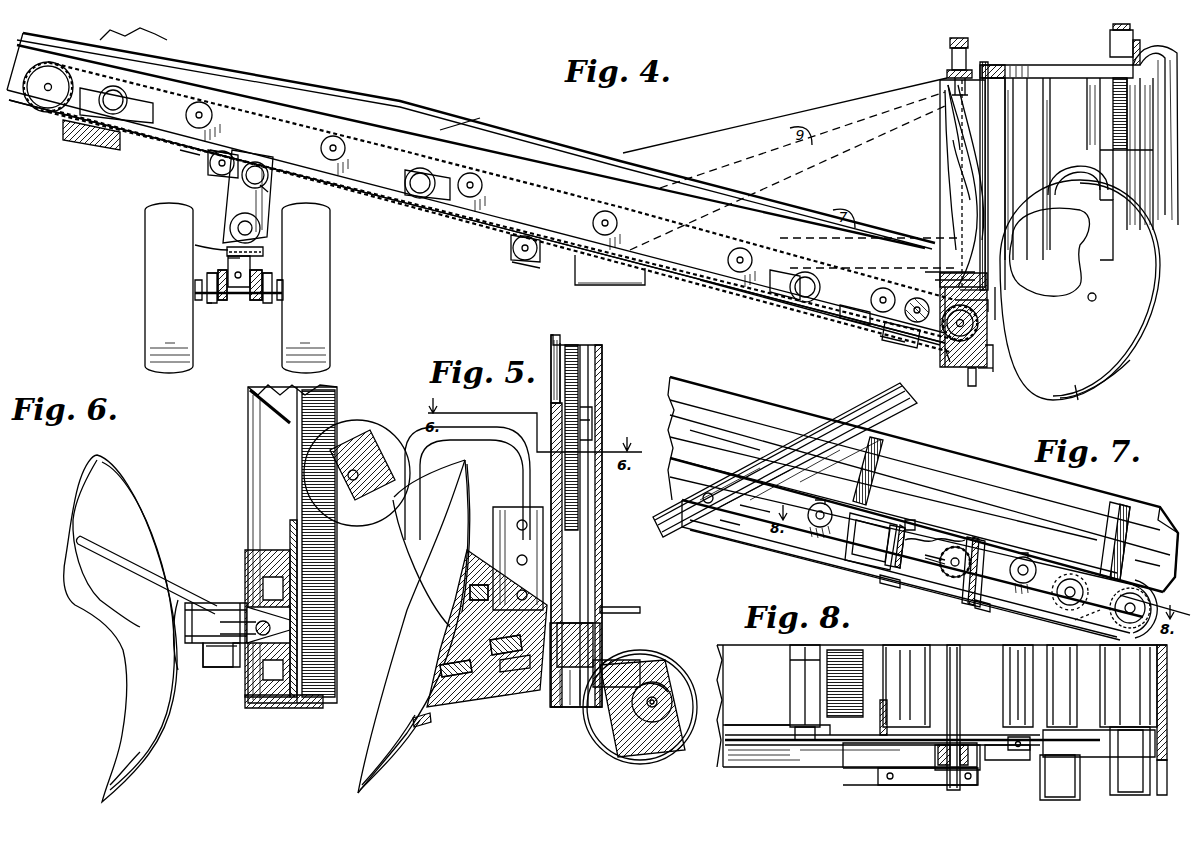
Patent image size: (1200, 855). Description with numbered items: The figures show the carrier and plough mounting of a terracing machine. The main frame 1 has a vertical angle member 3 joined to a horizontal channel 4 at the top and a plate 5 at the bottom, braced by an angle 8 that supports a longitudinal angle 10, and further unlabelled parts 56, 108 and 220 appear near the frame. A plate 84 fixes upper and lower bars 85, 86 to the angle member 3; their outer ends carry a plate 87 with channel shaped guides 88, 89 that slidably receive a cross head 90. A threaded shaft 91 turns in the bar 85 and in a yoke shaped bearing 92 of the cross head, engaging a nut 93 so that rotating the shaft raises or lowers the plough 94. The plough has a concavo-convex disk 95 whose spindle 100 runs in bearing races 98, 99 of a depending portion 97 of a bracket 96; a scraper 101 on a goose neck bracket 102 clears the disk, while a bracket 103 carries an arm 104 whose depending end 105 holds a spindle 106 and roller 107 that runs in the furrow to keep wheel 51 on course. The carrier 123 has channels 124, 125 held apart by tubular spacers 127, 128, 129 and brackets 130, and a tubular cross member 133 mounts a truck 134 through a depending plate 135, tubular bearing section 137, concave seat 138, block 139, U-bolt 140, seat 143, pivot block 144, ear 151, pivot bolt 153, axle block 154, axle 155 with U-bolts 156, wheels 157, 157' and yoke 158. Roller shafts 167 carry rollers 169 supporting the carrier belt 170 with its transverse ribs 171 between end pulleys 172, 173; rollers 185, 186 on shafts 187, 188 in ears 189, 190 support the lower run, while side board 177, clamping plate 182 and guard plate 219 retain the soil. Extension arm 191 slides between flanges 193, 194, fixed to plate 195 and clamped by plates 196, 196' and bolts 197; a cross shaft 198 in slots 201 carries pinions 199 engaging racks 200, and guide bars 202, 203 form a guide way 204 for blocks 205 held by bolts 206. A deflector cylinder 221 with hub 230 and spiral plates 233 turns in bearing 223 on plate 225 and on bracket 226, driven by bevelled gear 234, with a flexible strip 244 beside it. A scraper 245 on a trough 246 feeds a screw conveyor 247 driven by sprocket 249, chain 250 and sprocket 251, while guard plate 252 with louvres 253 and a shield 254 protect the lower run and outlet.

In FIG. 4, the main frame 1 is at (995, 72).
In FIG. 4, the vertical angle member 3 is at (1000, 90).
In FIG. 4, the horizontally arranged channel 4 is at (986, 64).
In FIG. 4, the plate 5 is at (955, 360).
In FIG. 7, the angle 8 is at (835, 418).
In FIG. 4, the longitudinal angle 10 is at (575, 272).
In FIG. 4, the wheel 51 is at (993, 360).
In FIG. 4, the pin 56 is at (992, 380).
In FIG. 4, the plate 84 is at (1010, 133).
In FIG. 4, the upper bar 85 is at (1065, 75).
In FIG. 6, the lower bar 86 is at (336, 572).
In FIG. 5, the lower bar 86 is at (378, 566).
In FIG. 6, the plate 87 is at (293, 520).
In FIG. 4, the channel shaped guide 88 is at (1158, 245).
In FIG. 6, the channel shaped guide 88 is at (250, 708).
In FIG. 4, the channel shaped guide 89 is at (1085, 139).
In FIG. 6, the channel shaped guide 89 is at (282, 558).
In FIG. 5, the channel shaped guide 89 is at (600, 371).
In FIG. 4, the cross head 90 is at (1130, 195).
In FIG. 6, the cross head 90 is at (240, 670).
In FIG. 5, the cross head 90 is at (522, 670).
In FIG. 4, the threaded shaft 91 is at (1118, 92).
In FIG. 6, the threaded shaft 91 is at (255, 637).
In FIG. 5, the threaded shaft 91 is at (585, 390).
In FIG. 5, the yoke shaped bearing 92 is at (598, 427).
In FIG. 5, the internally threaded nut 93 is at (593, 415).
In FIG. 4, the plough 94 is at (1105, 385).
In FIG. 6, the plough 94 is at (160, 550).
In FIG. 5, the plough 94 is at (395, 676).
In FIG. 4, the concavo-convex disk 95 is at (1075, 392).
In FIG. 6, the concavo-convex disk 95 is at (135, 750).
In FIG. 5, the concavo-convex disk 95 is at (402, 738).
In FIG. 6, the bracket 96 is at (203, 668).
In FIG. 5, the bracket 96 is at (500, 507).
In FIG. 5, the depending portion 97 is at (505, 675).
In FIG. 5, the bearing race 98 is at (468, 650).
In FIG. 5, the bearing race 99 is at (510, 658).
In FIG. 5, the spindle 100 is at (480, 680).
In FIG. 4, the scraper 101 is at (1080, 275).
In FIG. 6, the scraper 101 is at (80, 510).
In FIG. 5, the scraper 101 is at (420, 568).
In FIG. 4, the goose neck bracket 102 is at (1062, 175).
In FIG. 6, the goose neck bracket 102 is at (130, 555).
In FIG. 5, the goose neck bracket 102 is at (472, 427).
In FIG. 5, the bracket 103 is at (598, 645).
In FIG. 5, the arm 104 is at (605, 727).
In FIG. 5, the depending end 105 is at (645, 690).
In FIG. 5, the spindle 106 is at (660, 685).
In FIG. 5, the roller 107 is at (657, 755).
In FIG. 4, the bolt 108 is at (1110, 40).
In FIG. 4, the carrier 123 is at (628, 170).
In FIG. 7, the carrier 123 is at (890, 445).
In FIG. 8, the carrier 123 is at (830, 760).
In FIG. 7, the channel 124 is at (805, 552).
In FIG. 8, the channel 124 is at (803, 765).
In FIG. 4, the channel 125 is at (192, 140).
In FIG. 4, the tubular spacer 127 is at (120, 145).
In FIG. 4, the tubular spacer 128 is at (415, 198).
In FIG. 4, the tubular spacer 129 is at (790, 315).
In FIG. 8, the tubular spacer 129 is at (895, 655).
In FIG. 4, the bracket 130 is at (438, 214).
In FIG. 8, the bracket 130 is at (875, 705).
In FIG. 4, the tubular cross member 133 is at (269, 176).
In FIG. 4, the truck 134 is at (280, 300).
In FIG. 4, the depending plate 135 is at (236, 200).
In FIG. 4, the tubular bearing section 137 is at (262, 222).
In FIG. 4, the concave seat 138 is at (252, 230).
In FIG. 4, the block 139 is at (265, 252).
In FIG. 4, the U-bolt 140 is at (262, 215).
In FIG. 4, the seat 143 is at (225, 254).
In FIG. 4, the pivot block 144 is at (226, 259).
In FIG. 4, the ear 151 is at (218, 298).
In FIG. 4, the horizontal pivot bolt 153 is at (215, 303).
In FIG. 4, the axle block 154 is at (258, 303).
In FIG. 4, the axle 155 is at (197, 280).
In FIG. 4, the U-bolt 156 is at (212, 303).
In FIG. 4, the wheel 157 is at (154, 288).
In FIG. 4, the wheel 157' is at (328, 288).
In FIG. 4, the yoke 158 is at (262, 280).
In FIG. 4, the roller shaft 167 is at (483, 196).
In FIG. 4, the roller 169 is at (592, 223).
In FIG. 4, the carrier belt 170 is at (575, 198).
In FIG. 4, the transverse rib 171 is at (528, 186).
In FIG. 4, the end pulley 172 is at (58, 110).
In FIG. 4, the end pulley 173 is at (978, 326).
In FIG. 8, the end pulley 173 is at (1163, 770).
In FIG. 4, the side board 177 is at (405, 96).
In FIG. 4, the clamping plate 182 is at (505, 128).
In FIG. 4, the roller 185 is at (212, 170).
In FIG. 4, the roller 186 is at (318, 118).
In FIG. 4, the shaft 187 is at (230, 177).
In FIG. 4, the shaft 188 is at (522, 270).
In FIG. 4, the ear 189 is at (205, 155).
In FIG. 4, the ear 190 is at (512, 248).
In FIG. 7, the extension arm 191 is at (885, 580).
In FIG. 8, the extension arm 191 is at (990, 770).
In FIG. 7, the flange 193 is at (875, 515).
In FIG. 7, the flange 194 is at (843, 568).
In FIG. 8, the flange 194 is at (755, 765).
In FIG. 4, the plate 195 is at (947, 370).
In FIG. 7, the plate 195 is at (1110, 634).
In FIG. 7, the clamping plate 196 is at (939, 531).
In FIG. 7, the clamping plate 196' is at (958, 608).
In FIG. 8, the clamping plate 196' is at (910, 774).
In FIG. 7, the bolt 197 is at (905, 522).
In FIG. 8, the bolt 197 is at (885, 782).
In FIG. 4, the cross shaft 198 is at (875, 270).
In FIG. 7, the cross shaft 198 is at (975, 586).
In FIG. 8, the cross shaft 198 is at (958, 680).
In FIG. 7, the pinion gear 199 is at (940, 568).
In FIG. 8, the pinion gear 199 is at (975, 735).
In FIG. 7, the rack 200 is at (1012, 560).
In FIG. 4, the slot 201 is at (845, 330).
In FIG. 7, the slot 201 is at (895, 545).
In FIG. 8, the slot 201 is at (992, 745).
In FIG. 7, the guide bar 202 is at (693, 462).
In FIG. 7, the guide bar 203 is at (735, 528).
In FIG. 7, the guide way 204 is at (760, 518).
In FIG. 7, the block 205 is at (712, 530).
In FIG. 7, the bolt 206 is at (728, 488).
In FIG. 4, the guard plate 219 is at (885, 100).
In FIG. 4, the screw 220 is at (945, 152).
In FIG. 4, the cylinder 221 is at (945, 190).
In FIG. 4, the bearing 223 is at (952, 58).
In FIG. 4, the plate 225 is at (947, 74).
In FIG. 4, the bracket 226 is at (990, 306).
In FIG. 4, the hub 230 is at (950, 105).
In FIG. 4, the spiral plate 233 is at (947, 136).
In FIG. 4, the bevelled gear 234 is at (950, 42).
In FIG. 4, the flexible strip 244 is at (985, 292).
In FIG. 4, the scraper 245 is at (945, 272).
In FIG. 8, the scraper 245 is at (1110, 770).
In FIG. 4, the concave trough 246 is at (876, 335).
In FIG. 8, the concave trough 246 is at (1048, 770).
In FIG. 4, the spiral screw conveyor 247 is at (903, 344).
In FIG. 7, the spiral screw conveyor 247 is at (1075, 578).
In FIG. 8, the spiral screw conveyor 247 is at (1060, 680).
In FIG. 7, the sprocket 249 is at (1060, 618).
In FIG. 7, the chain 250 is at (1133, 568).
In FIG. 7, the sprocket 251 is at (1128, 545).
In FIG. 4, the guard plate 252 is at (672, 283).
In FIG. 4, the louvre 253 is at (725, 298).
In FIG. 4, the shield 254 is at (878, 350).